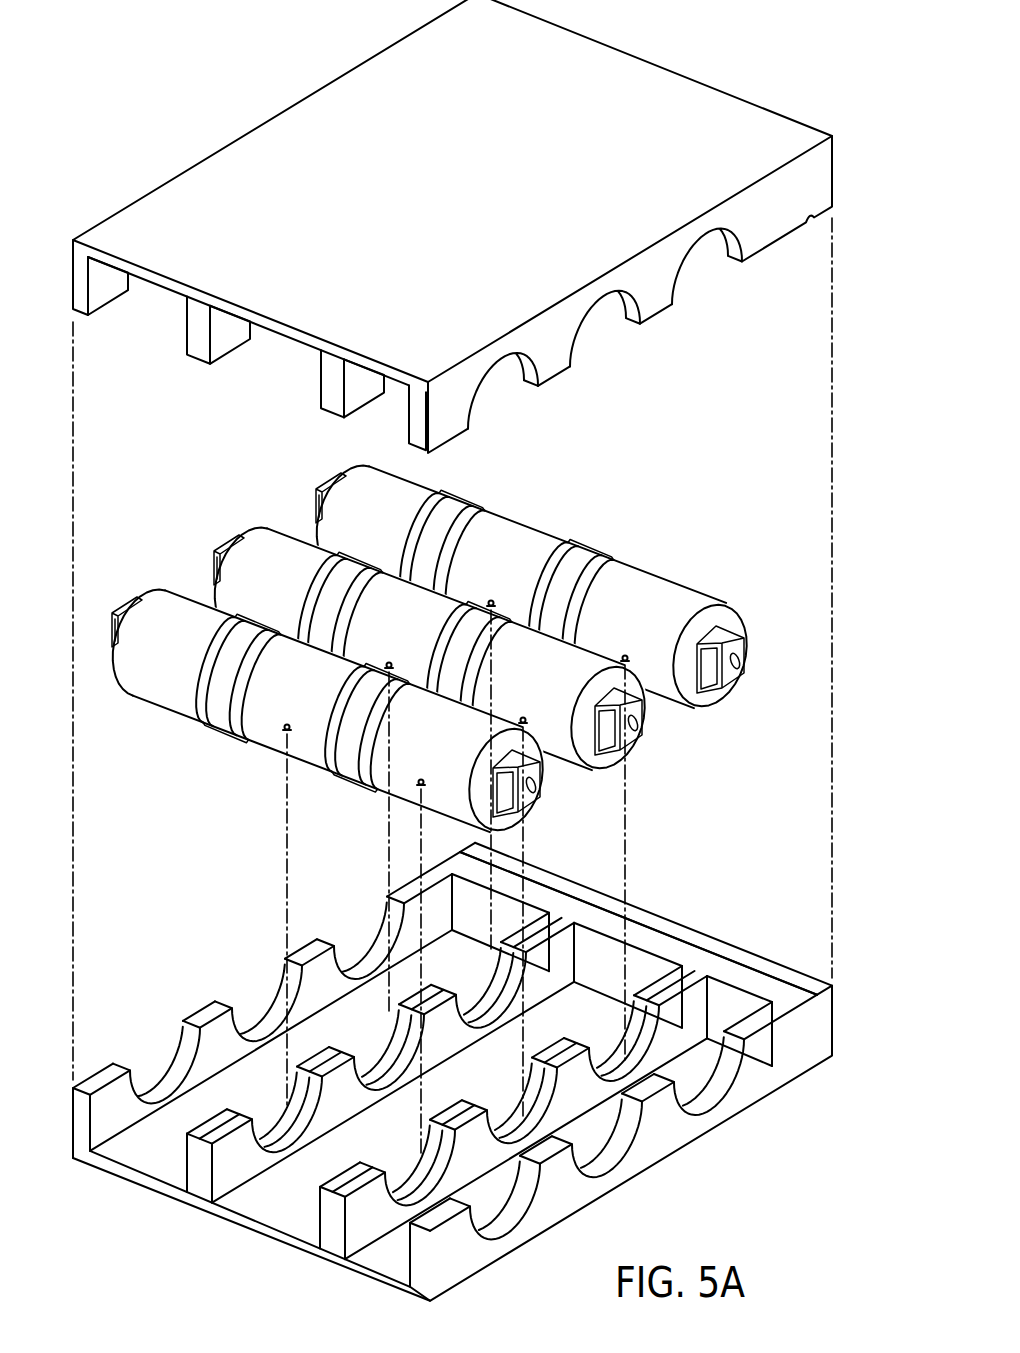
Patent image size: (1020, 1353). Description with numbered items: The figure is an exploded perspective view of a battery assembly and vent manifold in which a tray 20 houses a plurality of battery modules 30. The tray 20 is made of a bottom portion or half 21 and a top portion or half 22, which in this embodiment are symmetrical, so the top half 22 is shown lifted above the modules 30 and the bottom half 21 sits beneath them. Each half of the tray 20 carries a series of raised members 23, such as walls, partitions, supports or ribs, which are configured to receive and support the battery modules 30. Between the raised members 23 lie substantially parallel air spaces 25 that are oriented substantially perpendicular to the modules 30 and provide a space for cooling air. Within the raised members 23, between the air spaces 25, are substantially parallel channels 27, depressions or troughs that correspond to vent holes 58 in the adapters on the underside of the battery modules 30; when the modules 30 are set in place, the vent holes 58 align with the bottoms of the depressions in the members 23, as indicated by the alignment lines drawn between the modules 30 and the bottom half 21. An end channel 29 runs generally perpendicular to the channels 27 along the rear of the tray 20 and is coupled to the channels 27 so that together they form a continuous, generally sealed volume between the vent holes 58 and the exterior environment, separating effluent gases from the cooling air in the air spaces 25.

The tray 20 is at (457, 650).
The bottom portion or half 21 is at (457, 1072).
The top portion or half 22 is at (233, 164).
The raised members 23 is at (197, 1162).
The air spaces 25 is at (280, 1200).
The channels 27 is at (280, 1137).
The end channel 29 is at (737, 968).
The battery modules 30 is at (319, 714).
The vent holes 58 is at (285, 737).